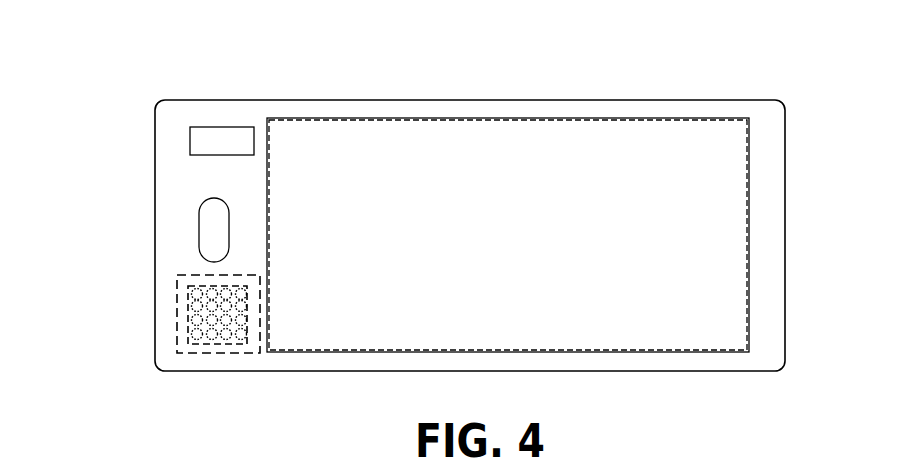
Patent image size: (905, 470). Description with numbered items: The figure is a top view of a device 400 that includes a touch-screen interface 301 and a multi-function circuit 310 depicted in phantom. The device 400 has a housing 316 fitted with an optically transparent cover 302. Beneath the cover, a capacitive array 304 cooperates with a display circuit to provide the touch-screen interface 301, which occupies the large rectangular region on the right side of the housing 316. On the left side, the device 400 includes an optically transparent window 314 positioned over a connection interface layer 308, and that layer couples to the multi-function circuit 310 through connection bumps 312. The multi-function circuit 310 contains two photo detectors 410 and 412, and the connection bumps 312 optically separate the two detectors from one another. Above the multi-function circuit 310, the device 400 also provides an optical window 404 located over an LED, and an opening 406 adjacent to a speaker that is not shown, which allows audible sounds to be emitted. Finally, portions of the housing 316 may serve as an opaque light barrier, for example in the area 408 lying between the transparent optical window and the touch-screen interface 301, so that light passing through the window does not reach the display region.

The device 400 is at (117, 52).
The touch-screen interface 301 is at (523, 245).
The optically transparent cover 302 is at (262, 106).
The capacitive array 304 is at (407, 342).
The connection interface layer 308 is at (189, 305).
The multi-function circuit 310 is at (178, 296).
The connection bumps 312 is at (204, 289).
The optically transparent window 314 is at (218, 348).
The housing 316 is at (487, 100).
The optical window 404 is at (190, 127).
The opening 406 is at (199, 224).
The area 408 is at (263, 354).
The photo detector 410 is at (197, 334).
The photo detector 412 is at (247, 333).